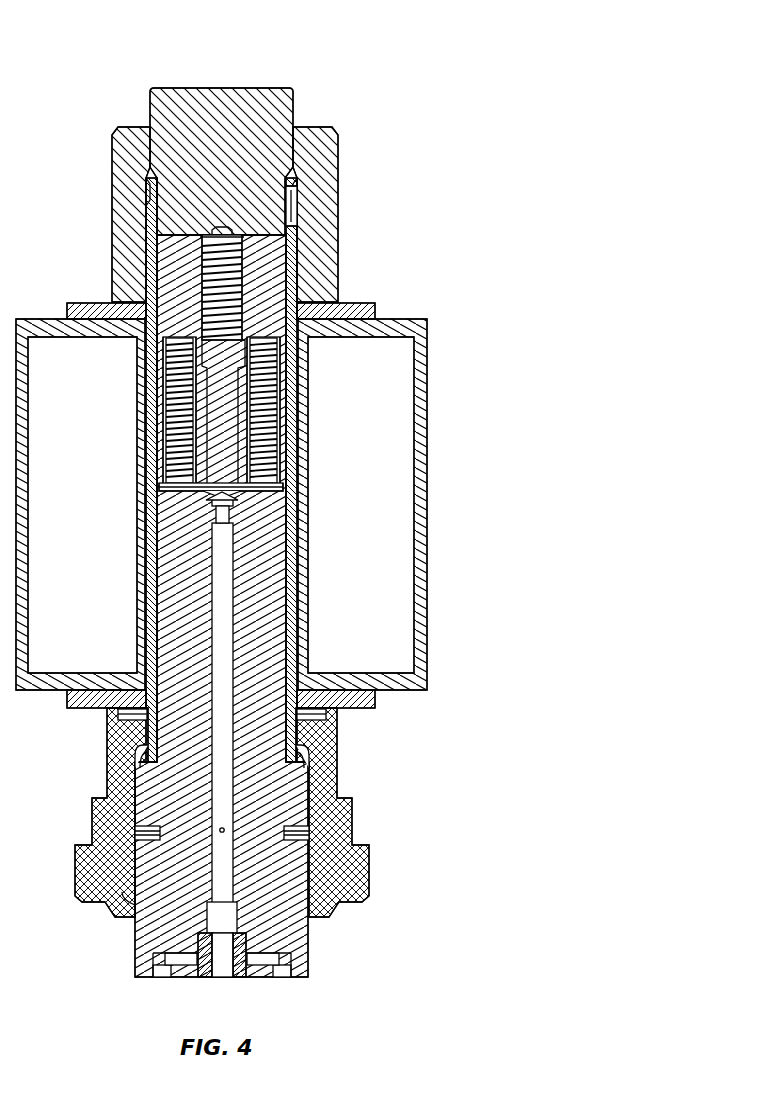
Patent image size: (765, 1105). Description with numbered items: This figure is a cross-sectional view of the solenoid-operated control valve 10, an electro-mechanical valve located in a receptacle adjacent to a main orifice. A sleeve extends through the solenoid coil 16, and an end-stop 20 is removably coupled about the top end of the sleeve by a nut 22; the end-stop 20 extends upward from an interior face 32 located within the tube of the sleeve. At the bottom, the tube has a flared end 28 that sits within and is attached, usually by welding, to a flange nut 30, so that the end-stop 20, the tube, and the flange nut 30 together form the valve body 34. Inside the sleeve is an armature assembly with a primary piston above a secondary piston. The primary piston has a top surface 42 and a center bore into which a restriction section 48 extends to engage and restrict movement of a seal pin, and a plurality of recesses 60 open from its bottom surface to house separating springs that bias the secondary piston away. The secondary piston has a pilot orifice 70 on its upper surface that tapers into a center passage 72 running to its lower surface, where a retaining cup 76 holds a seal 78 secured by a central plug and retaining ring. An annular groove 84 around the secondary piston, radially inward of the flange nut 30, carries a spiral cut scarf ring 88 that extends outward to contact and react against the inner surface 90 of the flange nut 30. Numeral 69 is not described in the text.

The solenoid-operated control valve 10 is at (460, 48).
The solenoid coil 16 is at (430, 388).
The end-stop 20 is at (272, 88).
The nut 22 is at (340, 176).
The flared end 28 is at (302, 757).
The flange nut 30 is at (370, 870).
The interior face 32 is at (180, 238).
The valve body 34 is at (296, 328).
The top surface 42 is at (272, 232).
The restriction section 48 is at (244, 366).
The recesses 60 is at (196, 430).
The spring seat 69 is at (250, 472).
The pilot orifice 70 is at (234, 500).
The center passage 72 is at (236, 657).
The retaining cup 76 is at (283, 989).
The seal 78 is at (166, 978).
The annular groove 84 is at (136, 840).
The spiral cut scarf ring 88 is at (309, 836).
The inner surface 90 is at (138, 898).